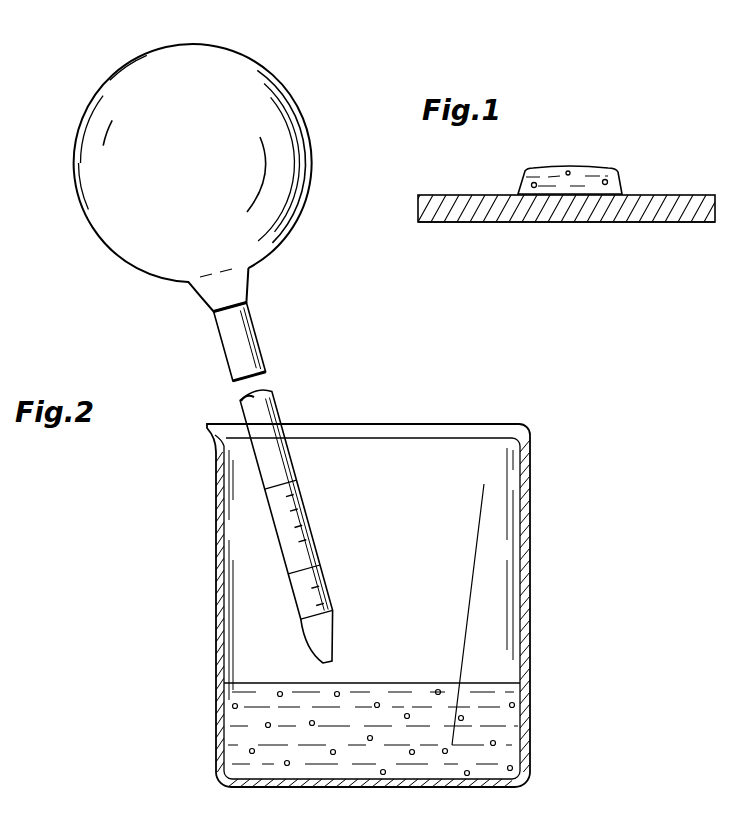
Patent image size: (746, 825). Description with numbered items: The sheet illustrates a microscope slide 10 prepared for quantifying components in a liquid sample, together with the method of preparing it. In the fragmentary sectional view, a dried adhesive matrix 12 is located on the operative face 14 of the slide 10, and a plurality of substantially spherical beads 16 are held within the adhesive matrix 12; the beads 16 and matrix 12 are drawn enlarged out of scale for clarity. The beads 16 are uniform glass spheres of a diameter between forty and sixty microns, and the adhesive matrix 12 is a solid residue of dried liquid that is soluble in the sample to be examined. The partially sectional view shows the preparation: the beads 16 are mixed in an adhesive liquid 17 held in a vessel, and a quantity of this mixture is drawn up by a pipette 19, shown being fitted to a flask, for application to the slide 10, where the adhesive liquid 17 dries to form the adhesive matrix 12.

In FIG. 1, the microscope slide 10 is at (443, 196).
In FIG. 1, the adhesive matrix 12 is at (584, 168).
In FIG. 1, the operative face 14 is at (651, 194).
In FIG. 1, the spherical beads 16 is at (566, 172).
In FIG. 2, the spherical beads 16 is at (515, 705).
In FIG. 2, the adhesive liquid 17 is at (513, 743).
In FIG. 2, the pipette 19 is at (275, 401).